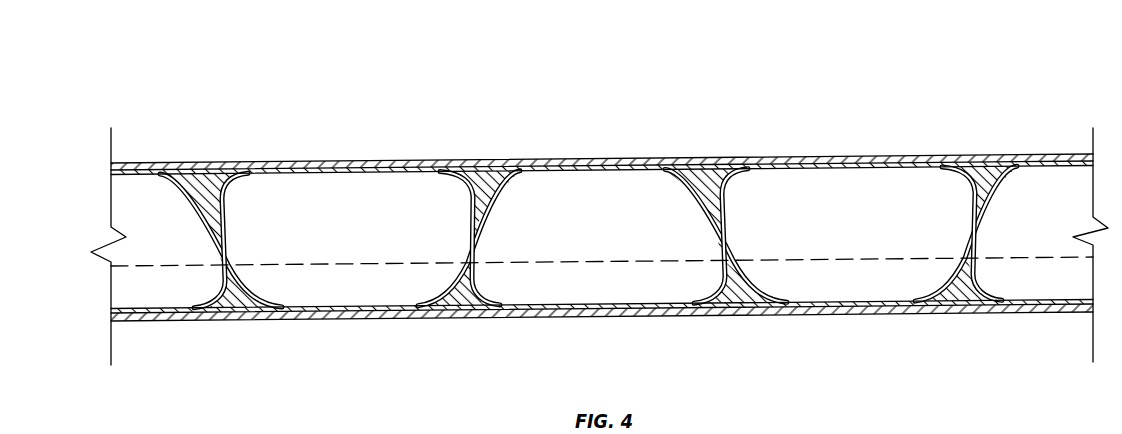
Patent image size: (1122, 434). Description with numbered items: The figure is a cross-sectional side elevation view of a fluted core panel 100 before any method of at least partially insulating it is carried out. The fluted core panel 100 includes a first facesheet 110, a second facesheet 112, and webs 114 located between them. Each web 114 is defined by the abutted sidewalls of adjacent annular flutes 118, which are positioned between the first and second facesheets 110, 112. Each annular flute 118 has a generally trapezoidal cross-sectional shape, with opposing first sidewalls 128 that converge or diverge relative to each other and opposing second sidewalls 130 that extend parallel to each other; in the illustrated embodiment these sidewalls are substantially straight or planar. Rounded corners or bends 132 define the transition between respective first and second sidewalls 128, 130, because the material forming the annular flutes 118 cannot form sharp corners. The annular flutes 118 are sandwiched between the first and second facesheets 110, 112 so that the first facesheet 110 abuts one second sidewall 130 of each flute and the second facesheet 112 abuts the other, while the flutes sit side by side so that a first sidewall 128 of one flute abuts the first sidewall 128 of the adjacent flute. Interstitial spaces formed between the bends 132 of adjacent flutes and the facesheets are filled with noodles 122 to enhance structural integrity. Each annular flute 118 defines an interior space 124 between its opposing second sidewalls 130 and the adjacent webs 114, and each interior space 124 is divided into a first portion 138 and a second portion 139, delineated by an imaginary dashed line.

The fluted core panel 100 is at (897, 72).
The first facesheet 110 is at (602, 217).
The second facesheet 112 is at (1039, 324).
The web 114 is at (449, 248).
The annular flute 118 is at (367, 162).
The noodle 122 is at (488, 166).
The interior space 124 is at (172, 241).
The first sidewall 128 is at (490, 203).
The second sidewall 130 is at (640, 170).
The bend 132 is at (528, 175).
The first portion 138 is at (246, 212).
The second portion 139 is at (285, 283).